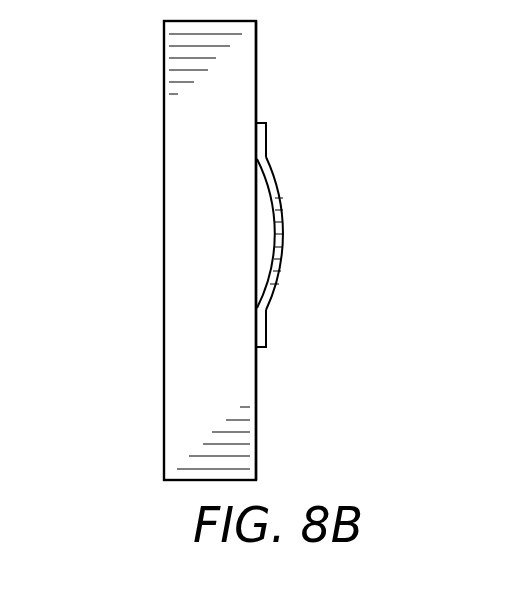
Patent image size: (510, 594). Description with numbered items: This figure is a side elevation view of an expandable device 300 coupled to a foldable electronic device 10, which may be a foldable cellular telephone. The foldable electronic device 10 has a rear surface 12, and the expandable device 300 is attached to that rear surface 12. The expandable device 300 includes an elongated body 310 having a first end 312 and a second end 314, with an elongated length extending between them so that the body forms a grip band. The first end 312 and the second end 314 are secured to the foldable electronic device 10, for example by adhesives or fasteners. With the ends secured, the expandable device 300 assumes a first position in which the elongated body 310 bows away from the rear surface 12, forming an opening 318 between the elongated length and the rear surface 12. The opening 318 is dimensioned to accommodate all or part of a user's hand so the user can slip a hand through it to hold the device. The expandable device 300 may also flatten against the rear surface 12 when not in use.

The foldable electronic device 10 is at (178, 181).
The rear surface 12 is at (264, 72).
The expandable device 300 is at (353, 226).
The elongated body 310 is at (269, 289).
The first end 312 is at (266, 175).
The second end 314 is at (259, 336).
The opening 318 is at (262, 236).